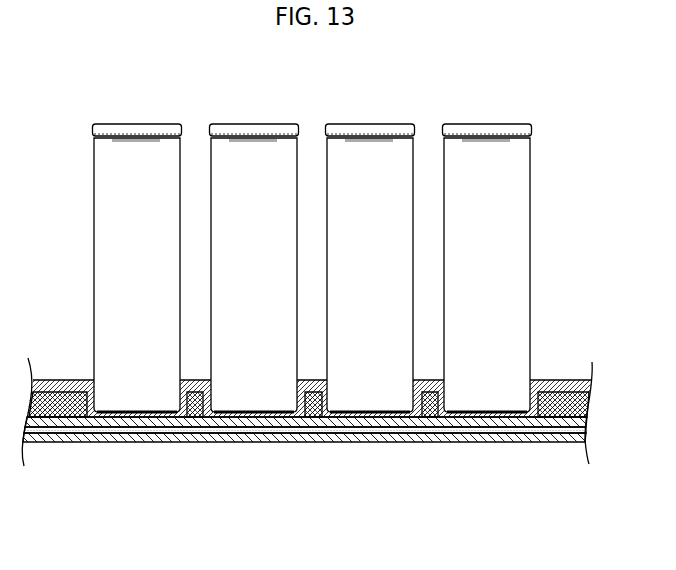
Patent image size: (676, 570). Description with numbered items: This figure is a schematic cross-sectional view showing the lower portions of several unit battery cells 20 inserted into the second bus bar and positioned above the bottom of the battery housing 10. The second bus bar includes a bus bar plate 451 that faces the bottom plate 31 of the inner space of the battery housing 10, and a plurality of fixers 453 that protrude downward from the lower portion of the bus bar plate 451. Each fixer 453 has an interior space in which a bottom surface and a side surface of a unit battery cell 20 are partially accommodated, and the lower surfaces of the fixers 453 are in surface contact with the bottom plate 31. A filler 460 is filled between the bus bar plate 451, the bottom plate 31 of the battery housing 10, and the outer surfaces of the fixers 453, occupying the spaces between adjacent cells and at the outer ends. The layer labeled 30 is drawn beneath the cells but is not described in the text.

The unit battery cells 20 is at (133, 128).
The battery housing 10 is at (158, 437).
The electrode layer 30 is at (125, 428).
The bottom plate 31 is at (93, 420).
The bus bar plate 451 is at (565, 386).
The fixers 453 is at (488, 421).
The filler 460 is at (52, 418).